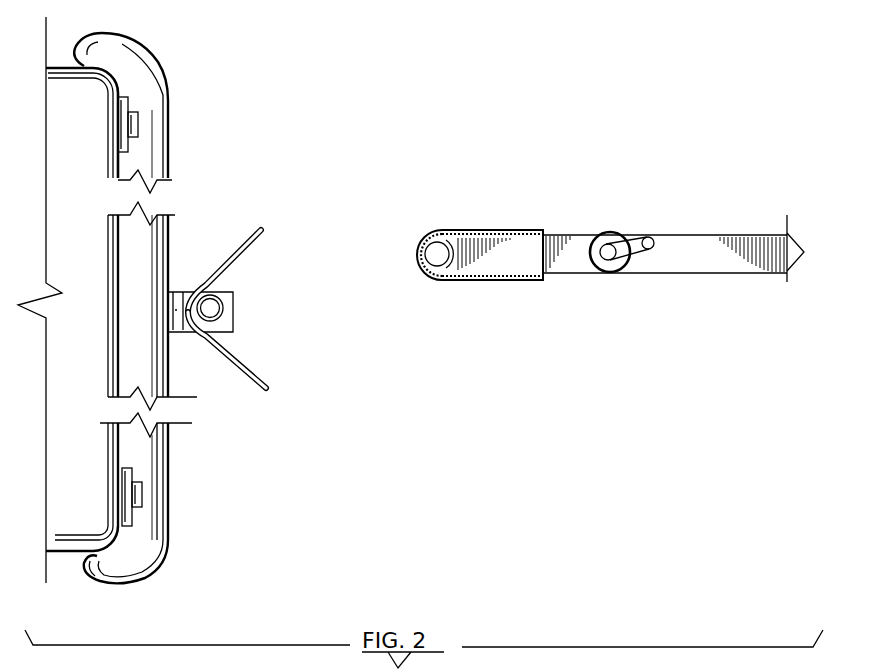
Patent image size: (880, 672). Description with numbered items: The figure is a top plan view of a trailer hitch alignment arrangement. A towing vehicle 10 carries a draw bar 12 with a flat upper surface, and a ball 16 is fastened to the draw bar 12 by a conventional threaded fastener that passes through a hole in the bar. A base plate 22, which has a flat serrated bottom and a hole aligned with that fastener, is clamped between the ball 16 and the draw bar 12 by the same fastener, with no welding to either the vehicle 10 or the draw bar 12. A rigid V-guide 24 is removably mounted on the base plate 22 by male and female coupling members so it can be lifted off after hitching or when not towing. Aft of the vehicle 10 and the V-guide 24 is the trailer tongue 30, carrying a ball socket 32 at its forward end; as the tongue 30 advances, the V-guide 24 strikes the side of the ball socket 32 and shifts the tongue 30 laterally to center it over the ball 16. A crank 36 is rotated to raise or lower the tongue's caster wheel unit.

The towing vehicle 10 is at (69, 95).
The draw bar 12 is at (172, 300).
The ball 16 is at (214, 310).
The base plate 22 is at (218, 327).
The V-guide 24 is at (250, 249).
The tongue 30 is at (656, 263).
The ball socket 32 is at (508, 245).
The crank 36 is at (636, 248).